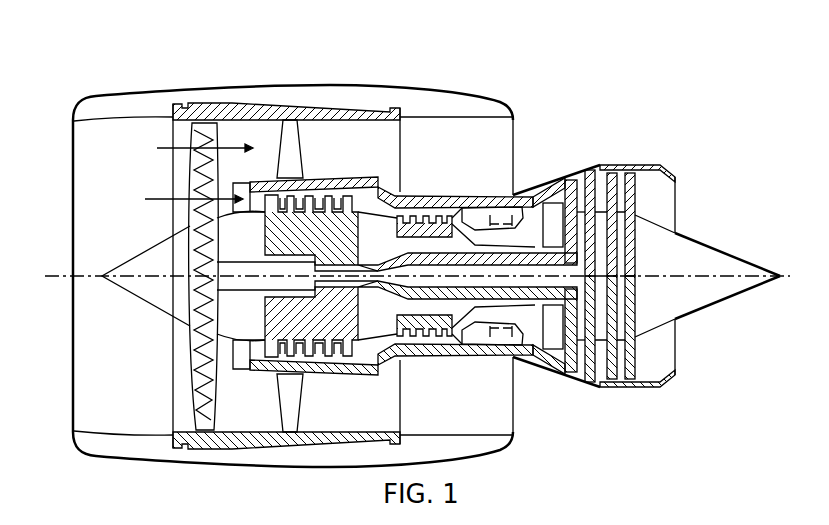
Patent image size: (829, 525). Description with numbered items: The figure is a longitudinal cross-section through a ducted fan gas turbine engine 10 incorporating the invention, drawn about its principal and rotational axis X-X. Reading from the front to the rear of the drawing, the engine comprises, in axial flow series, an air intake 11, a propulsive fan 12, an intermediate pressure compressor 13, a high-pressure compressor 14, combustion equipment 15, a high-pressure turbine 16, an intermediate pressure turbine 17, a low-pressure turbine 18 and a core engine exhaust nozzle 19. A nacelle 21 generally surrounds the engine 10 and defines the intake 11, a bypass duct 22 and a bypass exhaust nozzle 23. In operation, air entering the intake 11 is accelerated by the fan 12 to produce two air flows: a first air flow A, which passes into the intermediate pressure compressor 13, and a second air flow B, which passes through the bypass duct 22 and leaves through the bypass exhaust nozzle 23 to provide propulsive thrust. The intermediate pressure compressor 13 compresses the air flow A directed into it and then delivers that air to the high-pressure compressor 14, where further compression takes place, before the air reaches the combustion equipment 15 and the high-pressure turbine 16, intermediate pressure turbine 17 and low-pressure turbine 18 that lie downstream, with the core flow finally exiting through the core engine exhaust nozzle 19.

The ducted fan gas turbine engine 10 is at (106, 70).
The air intake 11 is at (120, 118).
The propulsive fan 12 is at (192, 393).
The intermediate pressure compressor 13 is at (328, 352).
The high-pressure compressor 14 is at (430, 208).
The combustion equipment 15 is at (480, 342).
The high-pressure turbine 16 is at (533, 357).
The intermediate pressure turbine 17 is at (562, 187).
The low-pressure turbine 18 is at (571, 384).
The core engine exhaust nozzle 19 is at (667, 165).
The nacelle 21 is at (328, 95).
The bypass duct 22 is at (472, 153).
The bypass exhaust nozzle 23 is at (515, 113).